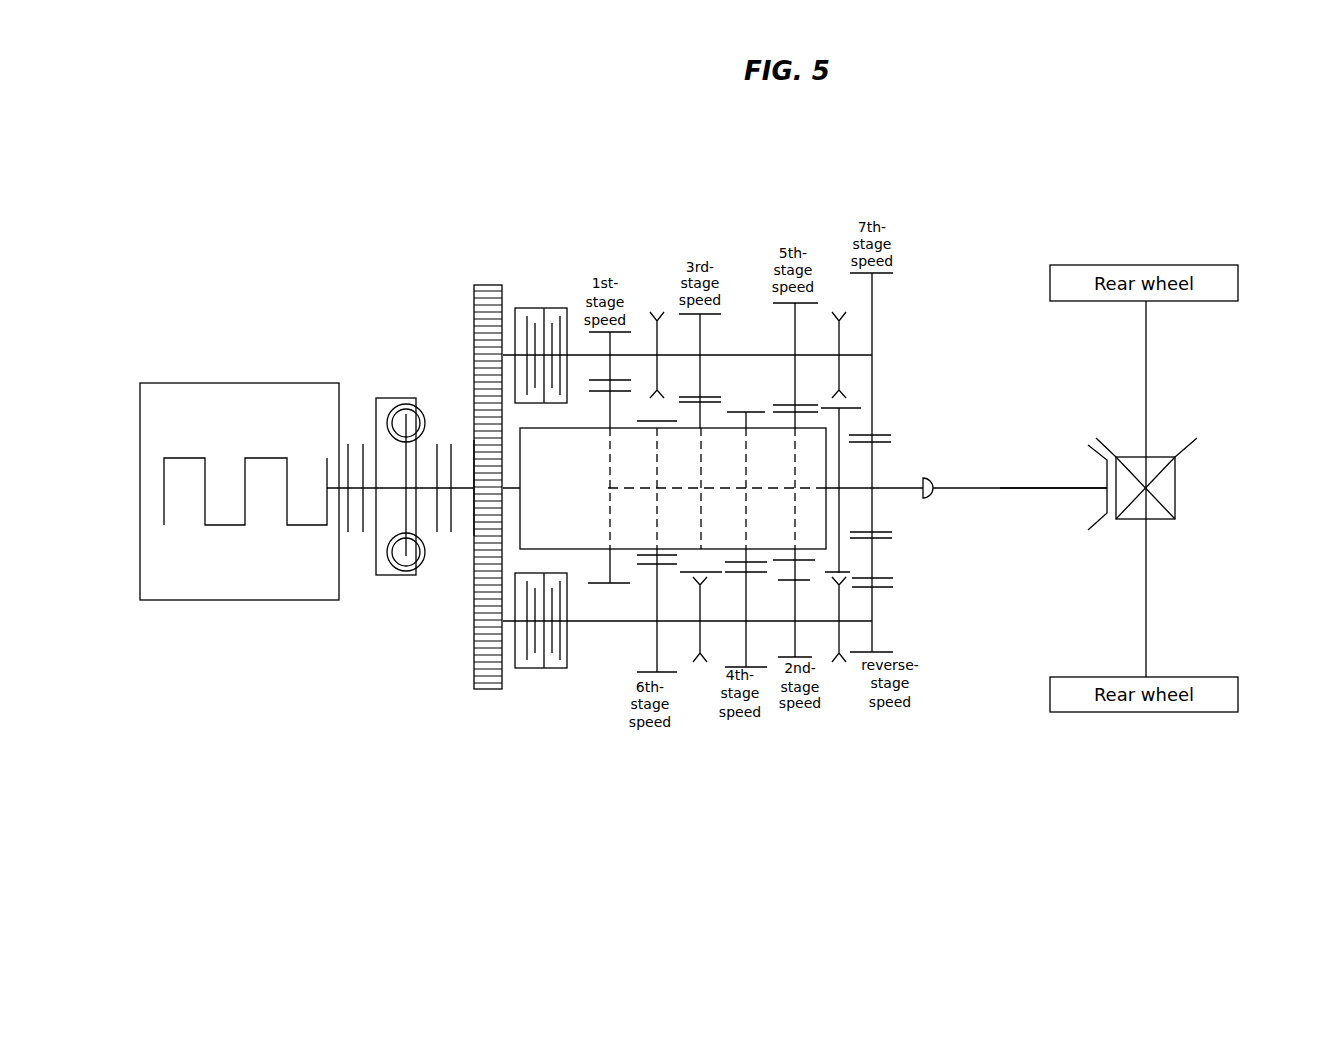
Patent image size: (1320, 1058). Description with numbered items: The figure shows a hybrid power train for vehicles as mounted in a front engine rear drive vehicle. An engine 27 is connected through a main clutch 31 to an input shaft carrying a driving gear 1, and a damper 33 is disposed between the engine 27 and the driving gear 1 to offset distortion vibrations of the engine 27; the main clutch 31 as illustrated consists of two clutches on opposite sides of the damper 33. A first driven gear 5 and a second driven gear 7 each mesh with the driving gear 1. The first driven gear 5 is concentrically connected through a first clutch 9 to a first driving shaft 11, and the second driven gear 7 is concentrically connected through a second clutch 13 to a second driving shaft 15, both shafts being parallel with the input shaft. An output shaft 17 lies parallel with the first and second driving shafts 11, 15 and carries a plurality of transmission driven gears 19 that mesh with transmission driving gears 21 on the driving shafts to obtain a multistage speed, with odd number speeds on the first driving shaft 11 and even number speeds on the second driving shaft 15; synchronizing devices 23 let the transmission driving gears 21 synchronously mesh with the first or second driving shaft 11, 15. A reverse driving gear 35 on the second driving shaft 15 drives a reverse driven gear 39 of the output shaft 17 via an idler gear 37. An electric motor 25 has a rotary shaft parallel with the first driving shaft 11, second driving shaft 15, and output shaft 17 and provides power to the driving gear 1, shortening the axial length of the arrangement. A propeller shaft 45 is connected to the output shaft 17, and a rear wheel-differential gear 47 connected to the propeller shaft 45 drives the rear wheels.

The driving gear 1 is at (475, 447).
The first driven gear 5 is at (483, 285).
The second driven gear 7 is at (485, 690).
The first clutch 9 is at (540, 307).
The first driving shaft 11 is at (874, 359).
The second clutch 13 is at (547, 670).
The second driving shaft 15 is at (874, 626).
The output shaft 17 is at (885, 491).
The transmission driven gears 19 is at (637, 419).
The transmission driving gears 21 is at (578, 330).
The synchronizing devices 23 is at (658, 312).
The electric motor 25 is at (583, 549).
The engine 27 is at (213, 600).
The main clutch 31 is at (354, 442).
The damper 33 is at (383, 399).
The reverse driving gear 35 is at (922, 655).
The idler gear 37 is at (879, 547).
The reverse driven gear 39 is at (879, 434).
The propeller shaft 45 is at (1062, 491).
The rear wheel-differential gear 47 is at (1176, 479).